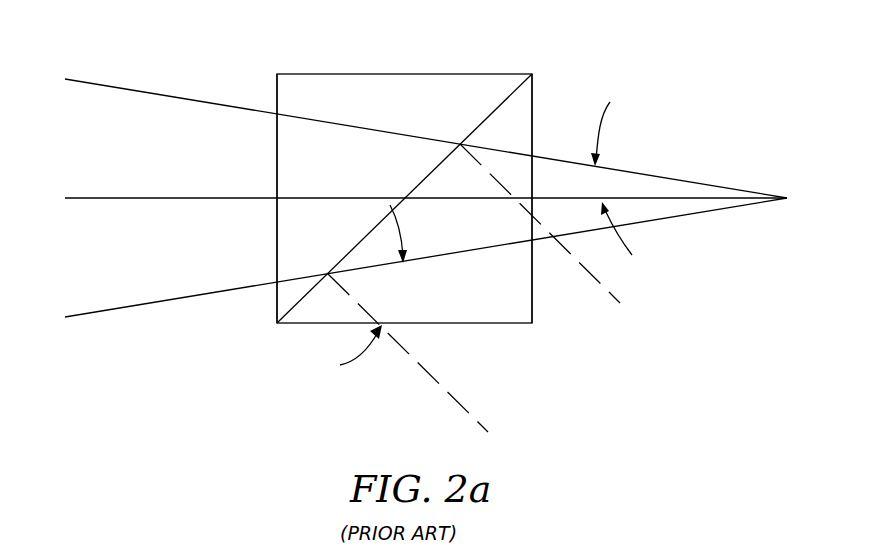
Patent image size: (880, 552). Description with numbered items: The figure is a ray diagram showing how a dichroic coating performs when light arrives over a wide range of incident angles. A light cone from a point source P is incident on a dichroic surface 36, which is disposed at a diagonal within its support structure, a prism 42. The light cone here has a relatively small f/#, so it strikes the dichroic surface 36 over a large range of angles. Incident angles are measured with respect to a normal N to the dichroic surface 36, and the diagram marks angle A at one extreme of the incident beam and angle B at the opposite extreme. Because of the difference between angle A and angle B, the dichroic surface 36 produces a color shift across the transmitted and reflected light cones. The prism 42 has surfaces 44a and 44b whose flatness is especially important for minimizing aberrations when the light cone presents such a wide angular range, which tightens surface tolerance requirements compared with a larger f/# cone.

The prism 42 is at (353, 90).
The dichroic surface 36 is at (503, 100).
The surface 44a is at (277, 158).
The surface 44b is at (532, 305).
The angle A is at (597, 184).
The angle B is at (398, 297).
The normal N is at (486, 299).
The point source P is at (439, 201).